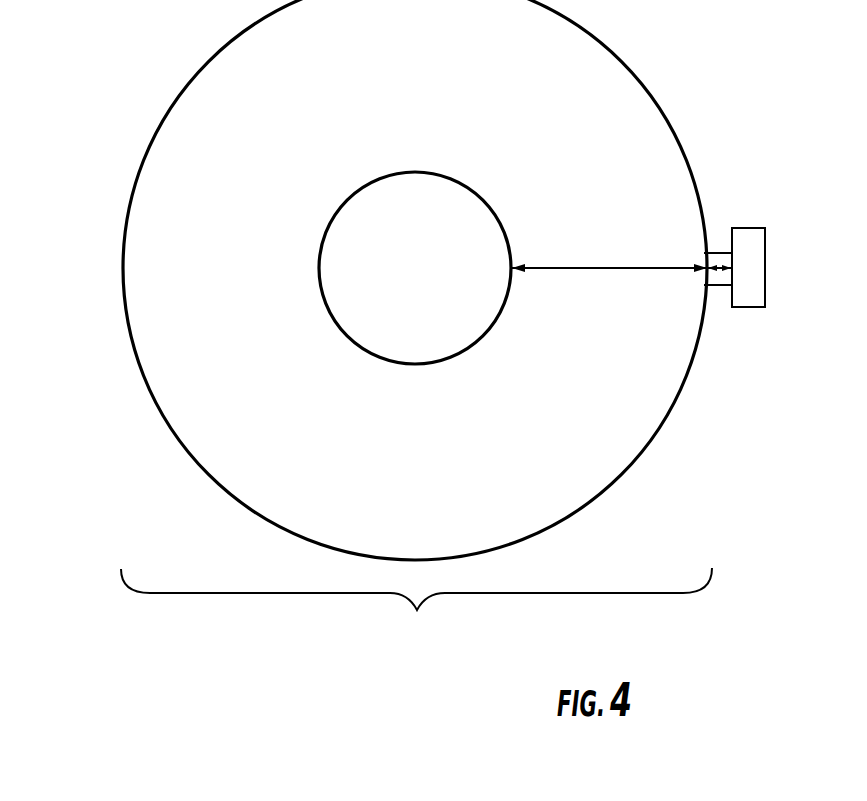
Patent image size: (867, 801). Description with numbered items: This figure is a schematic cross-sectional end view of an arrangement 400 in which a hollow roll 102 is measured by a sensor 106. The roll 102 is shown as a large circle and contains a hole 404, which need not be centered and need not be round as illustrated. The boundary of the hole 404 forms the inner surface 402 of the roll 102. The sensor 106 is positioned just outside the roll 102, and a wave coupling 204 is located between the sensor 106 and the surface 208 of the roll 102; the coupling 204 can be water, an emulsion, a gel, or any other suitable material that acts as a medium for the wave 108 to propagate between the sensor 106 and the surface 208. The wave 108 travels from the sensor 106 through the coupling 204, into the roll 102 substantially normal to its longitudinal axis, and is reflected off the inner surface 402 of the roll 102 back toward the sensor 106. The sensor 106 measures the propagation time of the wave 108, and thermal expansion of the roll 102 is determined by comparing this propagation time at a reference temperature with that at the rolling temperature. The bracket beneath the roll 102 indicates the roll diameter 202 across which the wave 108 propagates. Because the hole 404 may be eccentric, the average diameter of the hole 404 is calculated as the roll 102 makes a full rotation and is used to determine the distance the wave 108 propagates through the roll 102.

The wafer processing arrangement 400 is at (82, 90).
The roll 102 is at (421, 280).
The surface of the roll 208 is at (662, 108).
The hole 404 is at (495, 325).
The inner surface of the roll 402 is at (414, 358).
The wave 108 is at (584, 266).
The wave coupling 204 is at (713, 253).
The sensor 106 is at (766, 258).
The roll diameter 202 is at (416, 606).